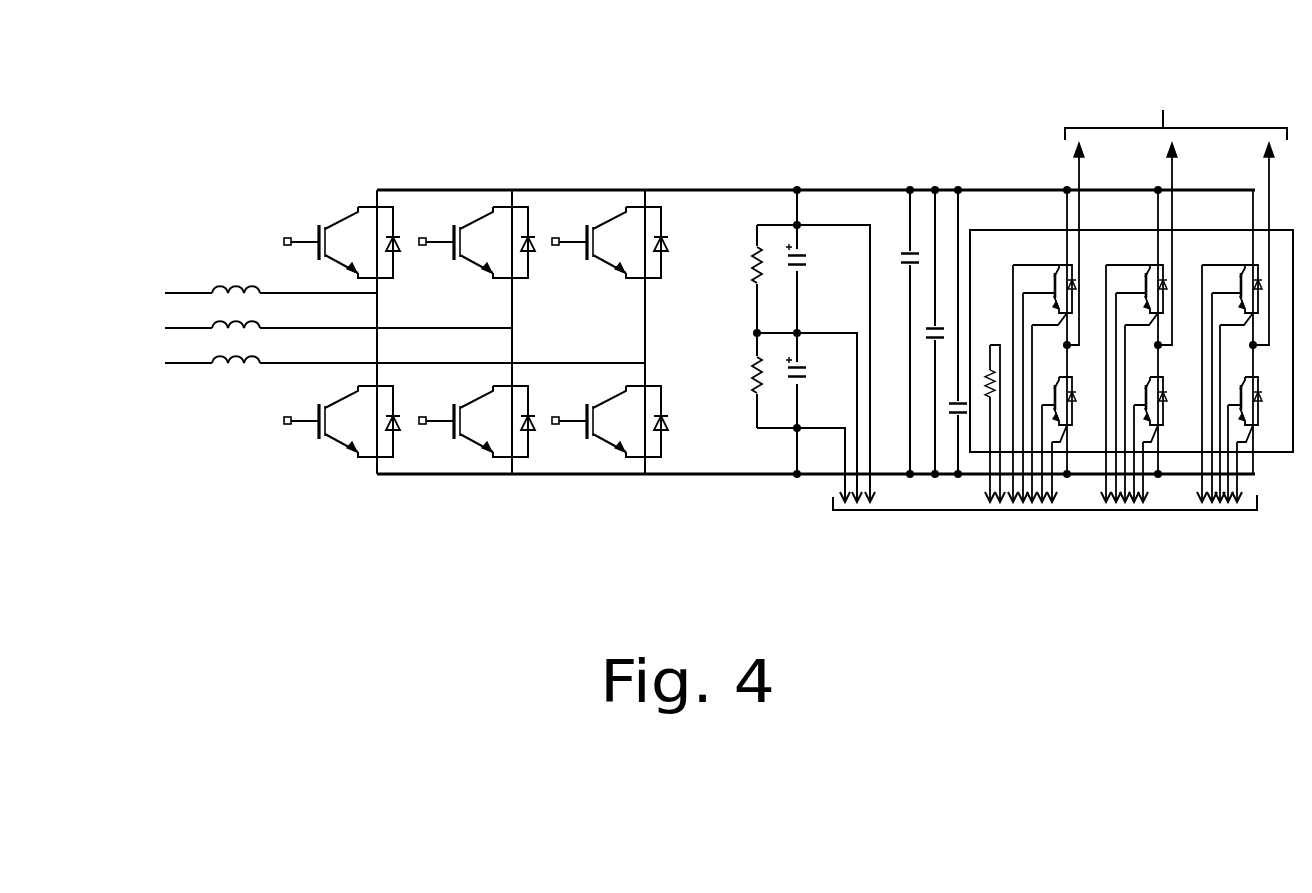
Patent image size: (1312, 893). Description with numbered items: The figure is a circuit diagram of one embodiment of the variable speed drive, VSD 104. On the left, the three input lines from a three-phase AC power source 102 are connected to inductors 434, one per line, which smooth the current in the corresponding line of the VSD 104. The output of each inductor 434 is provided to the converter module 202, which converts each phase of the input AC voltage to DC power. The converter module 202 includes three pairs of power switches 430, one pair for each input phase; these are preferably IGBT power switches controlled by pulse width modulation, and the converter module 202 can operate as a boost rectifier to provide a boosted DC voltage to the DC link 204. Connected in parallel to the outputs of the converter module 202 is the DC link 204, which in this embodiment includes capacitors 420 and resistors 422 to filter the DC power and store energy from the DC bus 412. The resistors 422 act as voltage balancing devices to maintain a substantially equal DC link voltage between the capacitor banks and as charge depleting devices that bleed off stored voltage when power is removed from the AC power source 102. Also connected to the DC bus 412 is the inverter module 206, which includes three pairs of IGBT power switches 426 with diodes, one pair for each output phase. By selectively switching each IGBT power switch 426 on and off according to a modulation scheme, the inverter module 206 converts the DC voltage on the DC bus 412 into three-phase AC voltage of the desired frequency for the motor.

The variable speed drive 104 is at (871, 68).
The AC power source 102 is at (339, 380).
The inductors 434 is at (237, 372).
The converter module 202 is at (531, 500).
The power switches 430 is at (346, 204).
The DC link 204 is at (716, 490).
The DC bus 412 is at (885, 190).
The capacitors 420 is at (808, 262).
The resistors 422 is at (752, 266).
The inverter module 206 is at (1014, 260).
The IGBT power switches 426 is at (1131, 232).